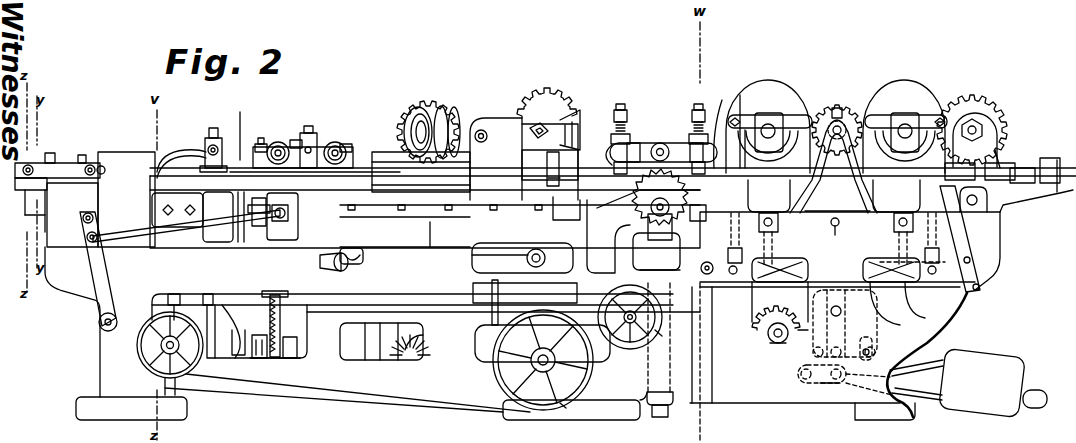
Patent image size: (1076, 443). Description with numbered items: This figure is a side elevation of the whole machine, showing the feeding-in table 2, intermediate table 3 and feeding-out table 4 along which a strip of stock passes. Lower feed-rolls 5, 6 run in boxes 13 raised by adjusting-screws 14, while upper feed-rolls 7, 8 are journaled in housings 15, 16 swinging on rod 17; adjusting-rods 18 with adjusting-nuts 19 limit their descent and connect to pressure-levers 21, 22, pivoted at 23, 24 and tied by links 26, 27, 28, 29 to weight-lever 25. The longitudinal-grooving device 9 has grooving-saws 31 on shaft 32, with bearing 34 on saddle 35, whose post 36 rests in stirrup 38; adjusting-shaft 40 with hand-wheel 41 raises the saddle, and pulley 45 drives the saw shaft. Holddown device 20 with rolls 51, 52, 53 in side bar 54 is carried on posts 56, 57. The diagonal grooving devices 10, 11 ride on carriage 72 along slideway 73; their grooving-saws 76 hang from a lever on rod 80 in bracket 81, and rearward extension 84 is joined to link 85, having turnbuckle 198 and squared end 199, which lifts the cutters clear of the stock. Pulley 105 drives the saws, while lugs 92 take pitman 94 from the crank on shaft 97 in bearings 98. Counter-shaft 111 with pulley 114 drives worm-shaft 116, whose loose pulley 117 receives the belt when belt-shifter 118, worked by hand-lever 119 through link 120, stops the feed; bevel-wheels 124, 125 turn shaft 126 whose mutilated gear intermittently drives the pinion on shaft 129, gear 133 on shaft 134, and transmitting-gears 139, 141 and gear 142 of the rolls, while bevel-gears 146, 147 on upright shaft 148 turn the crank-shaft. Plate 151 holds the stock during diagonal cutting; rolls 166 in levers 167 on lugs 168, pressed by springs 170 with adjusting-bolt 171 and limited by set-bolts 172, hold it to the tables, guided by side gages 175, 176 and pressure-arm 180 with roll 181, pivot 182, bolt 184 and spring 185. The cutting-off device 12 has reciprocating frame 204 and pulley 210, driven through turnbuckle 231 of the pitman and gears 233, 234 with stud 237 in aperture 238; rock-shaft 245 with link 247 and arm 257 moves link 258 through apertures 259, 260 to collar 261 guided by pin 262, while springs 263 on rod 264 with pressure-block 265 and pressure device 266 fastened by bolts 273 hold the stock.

The feeding-in table 2 is at (1036, 186).
The intermediate table 3 is at (447, 212).
The feeding-out table 4 is at (32, 178).
The lower feed-roll 5 is at (896, 196).
The lower feed-roll 6 is at (769, 196).
The upper feed-roll 7 is at (933, 112).
The upper feed-roll 8 is at (741, 94).
The longitudinal-grooving device 9 is at (643, 231).
The diagonally-reciprocating grooving device 10 is at (552, 88).
The diagonally-reciprocating grooving device 11 is at (421, 130).
The cutting-off device 12 is at (126, 187).
The boxes 13 is at (890, 208).
The adjusting-screws 14 is at (770, 258).
The housing 15 is at (903, 92).
The housing 16 is at (772, 92).
The rod 17 is at (842, 122).
The adjusting-rods 18 is at (752, 140).
The adjusting-nuts 19 is at (836, 151).
The holddown device 20 is at (652, 146).
The pressure-lever 21 is at (905, 284).
The pressure-lever 22 is at (758, 284).
The pivot 23 is at (980, 277).
The pivot 24 is at (728, 262).
The weight-lever 25 is at (920, 384).
The link 26 is at (870, 336).
The link 27 is at (806, 332).
The link 28 is at (847, 352).
The link 29 is at (838, 365).
The grooving-saws 31 is at (664, 147).
The shaft 32 is at (704, 221).
The bearing 34 is at (660, 204).
The saddle 35 is at (638, 250).
The post 36 is at (647, 272).
The stirrup 38 is at (675, 400).
The adjusting-shaft 40 is at (628, 345).
The hand-wheel 41 is at (650, 333).
The pulley 45 is at (212, 332).
The roll 51 is at (722, 126).
The roll 52 is at (696, 142).
The roll 53 is at (608, 150).
The side bar 54 is at (638, 142).
The post 56 is at (698, 103).
The post 57 is at (622, 104).
The carriage 72 is at (379, 219).
The slideway 73 is at (436, 234).
The grooving-saws 76 is at (444, 104).
The rod 80 is at (483, 128).
The bracket 81 is at (531, 169).
The rearward extension 84 is at (533, 124).
The link 85 is at (566, 118).
The depending lugs 92 is at (534, 250).
The pitman 94 is at (480, 260).
The shaft 97 is at (333, 268).
The bearings 98 is at (358, 264).
The pulley 105 is at (430, 104).
The counter-shaft 111 is at (150, 364).
The pulley 114 is at (188, 372).
The worm-shaft 116 is at (540, 366).
The loose pulley 117 is at (560, 404).
The belt-shifter 118 is at (480, 318).
The hand-lever 119 is at (965, 234).
The link 120 is at (822, 282).
The bevel-wheel 124 is at (758, 320).
The bevel-wheel 125 is at (768, 336).
The shaft 126 is at (776, 344).
The shaft 129 is at (833, 305).
The gear 133 is at (897, 303).
The shaft 134 is at (835, 234).
The transmitting-gear 139 is at (996, 150).
The transmitting-gear 141 is at (834, 104).
The gear 142 is at (929, 437).
The bevel-gear 146 is at (415, 320).
The bevel-gear 147 is at (392, 362).
The upright shaft 148 is at (381, 341).
The plate 151 is at (486, 165).
The rolls 166 is at (338, 140).
The levers 167 is at (255, 175).
The lugs 168 is at (318, 134).
The springs 170 is at (283, 142).
The adjusting-bolt 171 is at (312, 130).
The set-bolts 172 is at (260, 148).
The side gage 175 is at (833, 166).
The side gage 176 is at (242, 150).
The side pressure-arm 180 is at (1010, 206).
The roll 181 is at (958, 172).
The pivot 182 is at (1052, 158).
The bolt 184 is at (1022, 168).
The spring 185 is at (1003, 163).
The turnbuckle 198 is at (547, 179).
The squared end 199 is at (576, 211).
The reciprocating frame 204 is at (245, 226).
The pulley 210 is at (218, 217).
The turnbuckle 231 is at (225, 325).
The gear 233 is at (265, 324).
The transmitting-gear 234 is at (285, 358).
The stud 237 is at (256, 358).
The aperture 238 is at (262, 358).
The rock-shaft 245 is at (100, 327).
The link 247 is at (178, 298).
The arm 257 is at (97, 262).
The link 258 is at (172, 246).
The aperture 259 is at (87, 237).
The aperture 260 is at (85, 216).
The collar 261 is at (283, 233).
The guide-pin 262 is at (292, 215).
The springs 263 is at (187, 150).
The rod 264 is at (218, 140).
The pressure-block 265 is at (155, 180).
The pressure device 266 is at (45, 163).
The bolts 273 is at (52, 160).